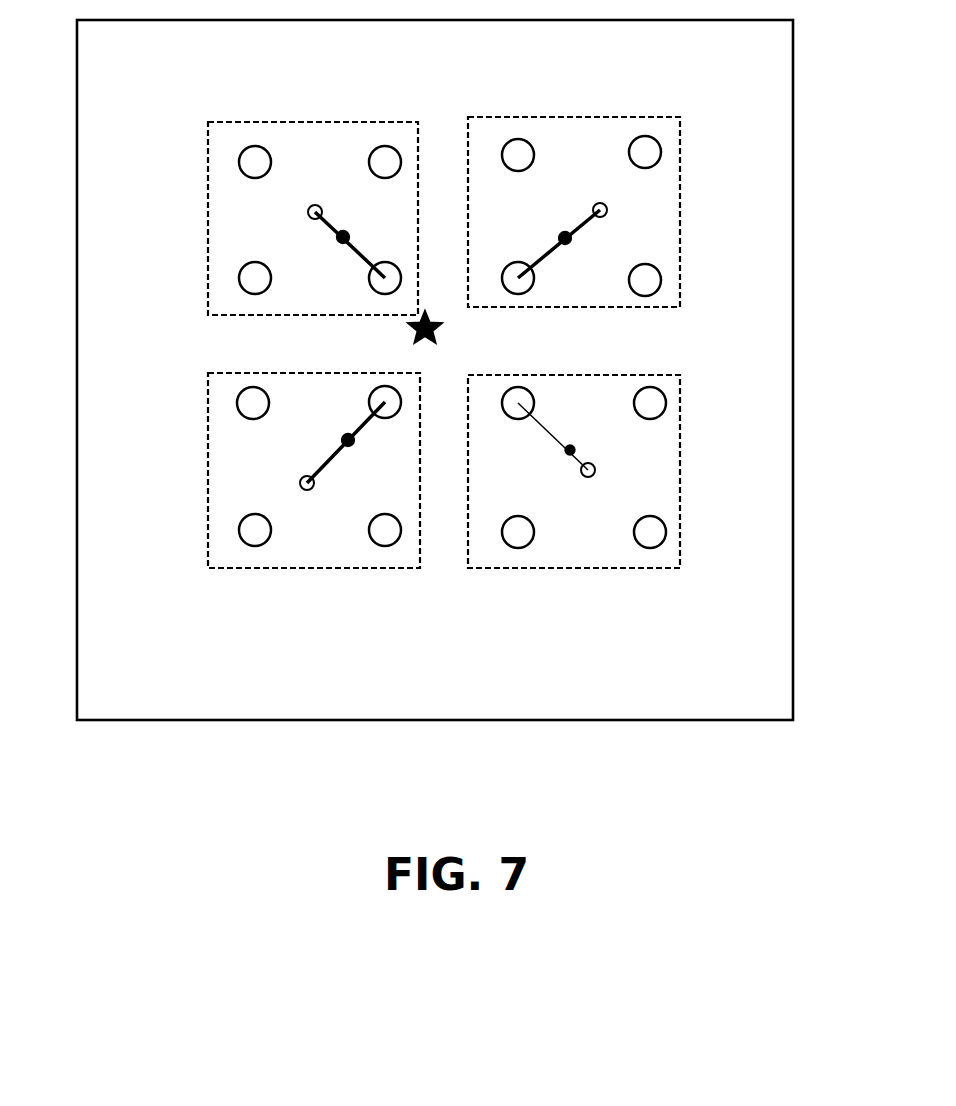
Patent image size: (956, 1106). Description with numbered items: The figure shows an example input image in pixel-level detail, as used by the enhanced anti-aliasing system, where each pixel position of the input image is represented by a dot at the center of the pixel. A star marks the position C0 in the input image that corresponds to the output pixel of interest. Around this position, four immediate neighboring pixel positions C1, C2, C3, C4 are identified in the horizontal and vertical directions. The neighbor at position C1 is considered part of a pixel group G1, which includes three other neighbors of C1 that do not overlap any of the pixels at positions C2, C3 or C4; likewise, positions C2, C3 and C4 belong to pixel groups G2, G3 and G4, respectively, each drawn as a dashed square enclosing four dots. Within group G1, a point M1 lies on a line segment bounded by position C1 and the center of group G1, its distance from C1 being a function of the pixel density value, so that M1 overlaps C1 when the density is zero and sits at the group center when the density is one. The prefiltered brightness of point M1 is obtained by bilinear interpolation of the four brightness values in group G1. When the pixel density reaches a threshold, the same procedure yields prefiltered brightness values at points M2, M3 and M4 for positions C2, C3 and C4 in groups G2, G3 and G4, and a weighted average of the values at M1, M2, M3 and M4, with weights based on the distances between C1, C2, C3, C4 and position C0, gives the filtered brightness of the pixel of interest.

The pixel group G1 is at (574, 490).
The pixel group G2 is at (314, 489).
The pixel group G3 is at (290, 220).
The pixel group G4 is at (598, 217).
The position in the input image C0 is at (397, 340).
The neighbor pixel position C1 is at (508, 423).
The neighbor pixel position C2 is at (359, 396).
The neighbor pixel position C3 is at (367, 290).
The neighbor pixel position C4 is at (503, 290).
The point M1 is at (568, 440).
The point M2 is at (354, 446).
The point M3 is at (357, 232).
The point M4 is at (557, 234).